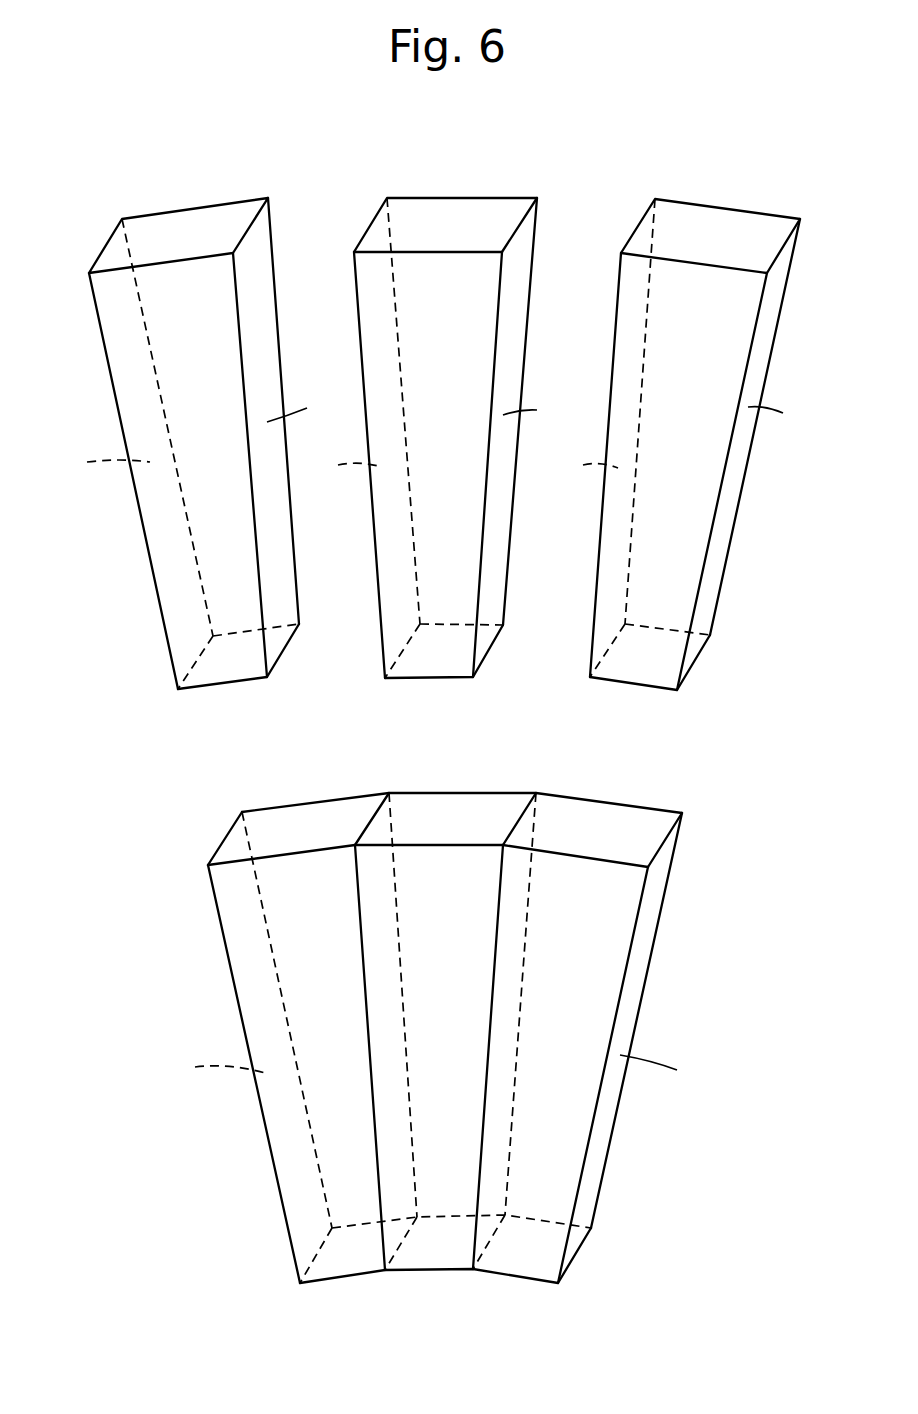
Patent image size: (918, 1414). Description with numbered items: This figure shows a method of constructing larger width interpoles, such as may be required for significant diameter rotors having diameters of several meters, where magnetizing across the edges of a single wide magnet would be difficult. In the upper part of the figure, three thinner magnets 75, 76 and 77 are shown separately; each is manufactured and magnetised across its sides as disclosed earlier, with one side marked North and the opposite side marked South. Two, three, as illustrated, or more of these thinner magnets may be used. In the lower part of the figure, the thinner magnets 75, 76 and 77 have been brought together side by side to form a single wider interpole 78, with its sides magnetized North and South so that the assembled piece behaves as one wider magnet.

The thinner magnet 75 is at (167, 222).
The thinner magnet 76 is at (451, 208).
The thinner magnet 77 is at (755, 223).
The single wider interpole 78 is at (172, 838).